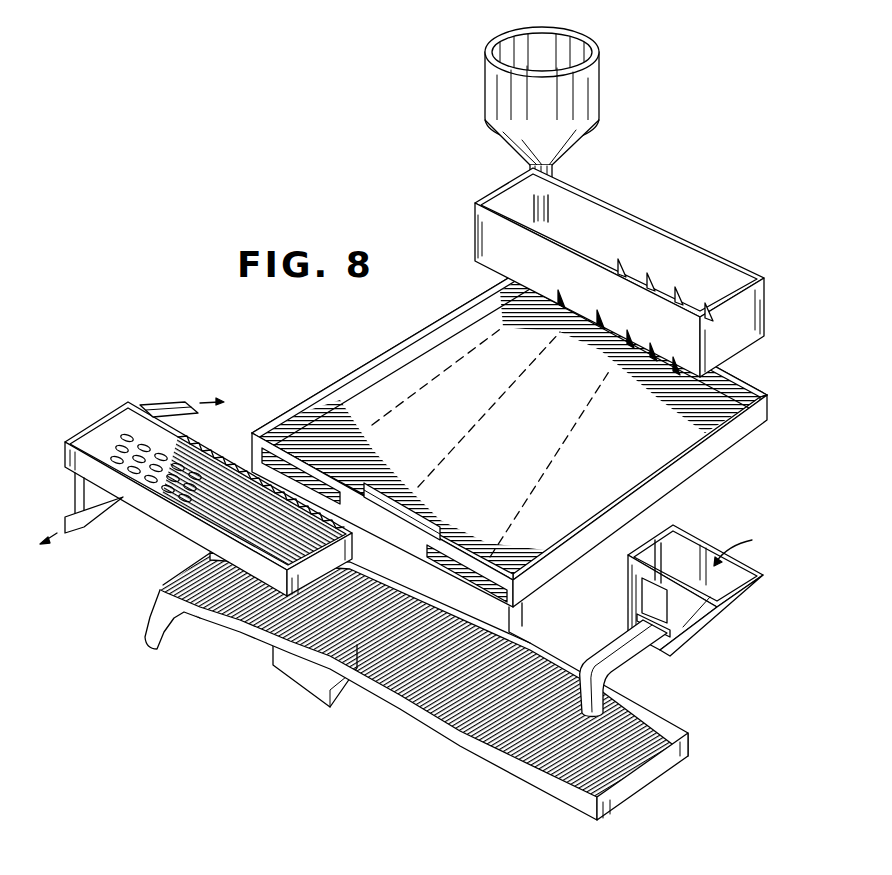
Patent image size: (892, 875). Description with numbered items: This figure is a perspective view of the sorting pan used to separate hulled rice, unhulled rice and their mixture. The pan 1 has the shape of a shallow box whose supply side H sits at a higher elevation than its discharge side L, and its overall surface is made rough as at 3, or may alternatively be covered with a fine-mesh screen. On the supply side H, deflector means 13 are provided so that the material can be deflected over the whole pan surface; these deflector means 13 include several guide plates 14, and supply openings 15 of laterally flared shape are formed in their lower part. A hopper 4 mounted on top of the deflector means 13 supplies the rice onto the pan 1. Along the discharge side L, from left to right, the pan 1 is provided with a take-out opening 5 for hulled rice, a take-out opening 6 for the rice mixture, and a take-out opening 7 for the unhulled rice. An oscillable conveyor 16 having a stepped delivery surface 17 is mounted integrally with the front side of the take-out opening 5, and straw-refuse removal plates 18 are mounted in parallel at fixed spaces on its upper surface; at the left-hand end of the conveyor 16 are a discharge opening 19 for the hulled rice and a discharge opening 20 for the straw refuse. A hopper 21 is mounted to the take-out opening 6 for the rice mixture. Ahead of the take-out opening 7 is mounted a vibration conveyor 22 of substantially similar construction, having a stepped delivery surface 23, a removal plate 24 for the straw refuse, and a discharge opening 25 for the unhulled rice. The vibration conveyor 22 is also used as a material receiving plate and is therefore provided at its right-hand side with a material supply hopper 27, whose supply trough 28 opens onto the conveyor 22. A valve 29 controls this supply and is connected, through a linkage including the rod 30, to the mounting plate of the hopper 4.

The pan 1 is at (510, 436).
The rough surface 3 is at (738, 430).
The hopper 4 is at (588, 107).
The take-out opening for hulled rice 5 is at (292, 473).
The take-out opening for the rice mixture 6 is at (380, 500).
The take-out opening for the unhulled rice 7 is at (466, 568).
The deflector means 13 is at (619, 272).
The guide plates 14 is at (647, 274).
The supply openings 15 is at (634, 333).
The oscillable conveyor 16 is at (208, 483).
The stepped delivery surface 17 is at (219, 480).
The straw-refuse removal plates 18 is at (143, 432).
The discharge opening for the hulled rice 19 is at (74, 520).
The discharge opening for the straw refuse 20 is at (174, 403).
The hopper 21 is at (313, 684).
The vibration conveyor 22 is at (424, 689).
The stepped delivery surface 23 is at (567, 786).
The removal plate for the straw-refuse 24 is at (512, 652).
The discharge opening for the unhulled rice 25 is at (135, 667).
The material supply hopper 27 is at (728, 610).
The supply trough 28 is at (640, 669).
The valve 29 is at (648, 598).
The rod 30 is at (653, 557).
The supply side H is at (736, 378).
The discharge side L is at (526, 592).